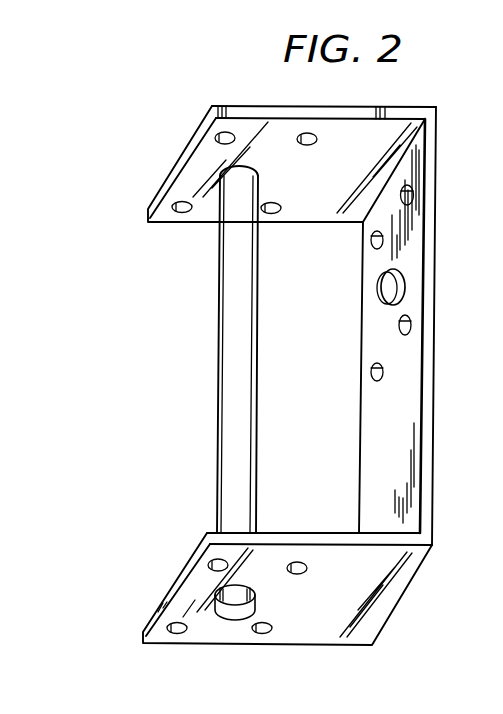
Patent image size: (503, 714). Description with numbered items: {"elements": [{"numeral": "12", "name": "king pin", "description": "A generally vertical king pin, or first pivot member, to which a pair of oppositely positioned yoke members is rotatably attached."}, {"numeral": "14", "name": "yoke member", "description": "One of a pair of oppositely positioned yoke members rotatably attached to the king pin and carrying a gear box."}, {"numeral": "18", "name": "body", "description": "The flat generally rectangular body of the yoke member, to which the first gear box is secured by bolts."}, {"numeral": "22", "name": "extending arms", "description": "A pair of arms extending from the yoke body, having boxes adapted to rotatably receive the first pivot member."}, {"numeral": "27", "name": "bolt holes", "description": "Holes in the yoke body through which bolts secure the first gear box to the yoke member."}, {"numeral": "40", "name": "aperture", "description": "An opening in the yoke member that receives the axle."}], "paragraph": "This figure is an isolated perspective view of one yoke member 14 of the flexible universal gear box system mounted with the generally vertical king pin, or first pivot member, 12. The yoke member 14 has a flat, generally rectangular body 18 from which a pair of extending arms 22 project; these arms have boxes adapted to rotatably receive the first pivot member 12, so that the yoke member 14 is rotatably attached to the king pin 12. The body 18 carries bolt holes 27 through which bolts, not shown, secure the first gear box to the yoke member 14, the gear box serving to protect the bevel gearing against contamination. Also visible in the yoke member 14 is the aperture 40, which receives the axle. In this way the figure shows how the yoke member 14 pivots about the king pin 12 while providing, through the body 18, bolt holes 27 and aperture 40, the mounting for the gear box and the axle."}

The rod 12 is at (235, 363).
The bracket 14 is at (464, 279).
The vertical web plate 18 is at (430, 215).
The flange plate 22 is at (414, 113).
The mounting holes 27 is at (177, 211).
The bore 40 is at (380, 288).